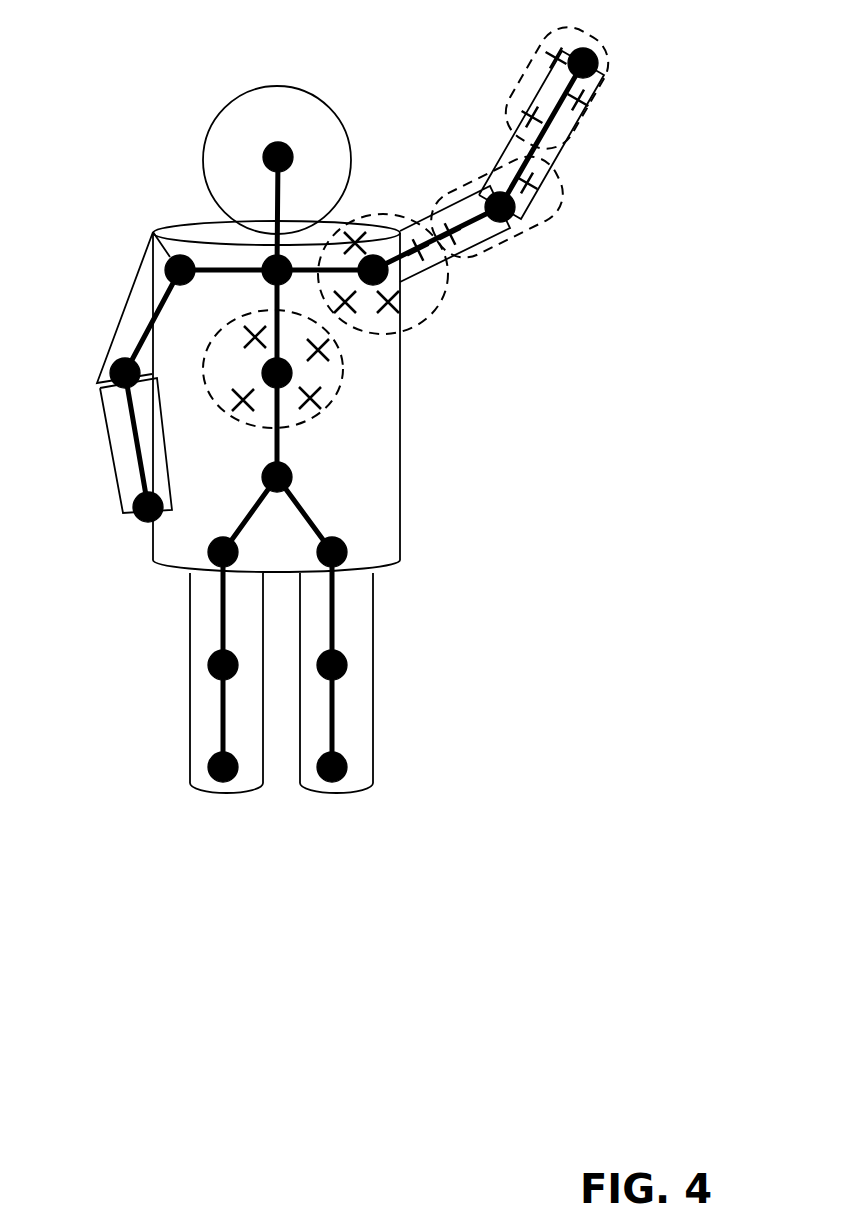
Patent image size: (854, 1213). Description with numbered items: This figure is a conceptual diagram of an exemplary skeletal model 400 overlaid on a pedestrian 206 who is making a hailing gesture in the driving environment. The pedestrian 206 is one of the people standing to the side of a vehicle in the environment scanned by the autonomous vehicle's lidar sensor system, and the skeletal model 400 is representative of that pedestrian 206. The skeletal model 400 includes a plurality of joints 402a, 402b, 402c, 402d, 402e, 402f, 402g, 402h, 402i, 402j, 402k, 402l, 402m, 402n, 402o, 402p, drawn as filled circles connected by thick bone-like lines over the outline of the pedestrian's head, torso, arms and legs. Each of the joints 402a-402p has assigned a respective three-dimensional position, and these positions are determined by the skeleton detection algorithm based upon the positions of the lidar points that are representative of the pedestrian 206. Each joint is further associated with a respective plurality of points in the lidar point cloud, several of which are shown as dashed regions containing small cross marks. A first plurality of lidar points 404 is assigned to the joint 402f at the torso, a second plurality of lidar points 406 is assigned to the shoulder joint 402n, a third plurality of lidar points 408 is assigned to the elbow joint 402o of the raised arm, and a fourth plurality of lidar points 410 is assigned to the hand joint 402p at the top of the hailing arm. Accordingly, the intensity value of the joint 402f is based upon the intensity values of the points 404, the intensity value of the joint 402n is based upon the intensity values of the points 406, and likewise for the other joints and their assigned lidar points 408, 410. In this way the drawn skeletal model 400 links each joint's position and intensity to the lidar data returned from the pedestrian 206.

The skeletal model 400 is at (272, 220).
The pedestrian 206 is at (350, 160).
The joint 402a is at (138, 519).
The joint 402b is at (118, 384).
The joint 402c is at (153, 237).
The joint 402d is at (266, 148).
The joint 402e is at (287, 260).
The joint 402f is at (265, 368).
The joint 402g is at (290, 466).
The joint 402h is at (218, 563).
The joint 402i is at (216, 655).
The joint 402j is at (216, 758).
The joint 402k is at (344, 539).
The joint 402l is at (342, 655).
The joint 402m is at (342, 758).
The joint 402n is at (402, 282).
The joint 402o is at (515, 216).
The joint 402p is at (596, 70).
The first plurality of lidar points 404 is at (343, 377).
The second plurality of lidar points 406 is at (420, 328).
The third plurality of lidar points 408 is at (555, 183).
The fourth plurality of lidar points 410 is at (618, 57).